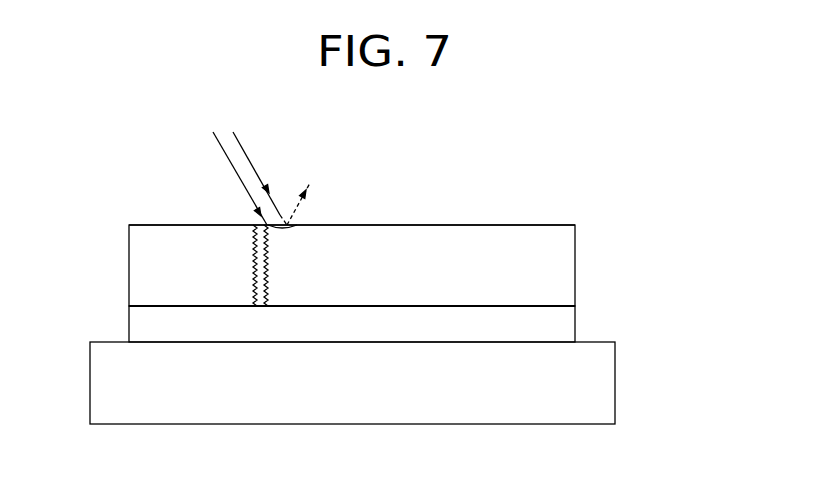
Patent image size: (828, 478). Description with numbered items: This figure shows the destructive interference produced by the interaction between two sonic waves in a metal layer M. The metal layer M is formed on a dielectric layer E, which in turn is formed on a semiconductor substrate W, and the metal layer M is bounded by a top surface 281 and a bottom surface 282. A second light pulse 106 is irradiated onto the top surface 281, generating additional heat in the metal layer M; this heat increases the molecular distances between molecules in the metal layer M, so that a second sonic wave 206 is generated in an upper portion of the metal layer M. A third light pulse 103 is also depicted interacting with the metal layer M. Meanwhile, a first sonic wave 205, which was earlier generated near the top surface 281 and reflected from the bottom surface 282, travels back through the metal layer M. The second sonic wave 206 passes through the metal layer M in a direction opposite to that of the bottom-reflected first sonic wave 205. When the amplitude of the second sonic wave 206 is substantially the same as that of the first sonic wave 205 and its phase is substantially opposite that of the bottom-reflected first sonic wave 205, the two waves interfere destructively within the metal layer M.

The second light pulse 106 is at (222, 145).
The third light pulse 103 is at (247, 150).
The second sonic wave 206 is at (297, 225).
The first sonic wave 205 is at (268, 258).
The top surface 281 is at (520, 224).
The bottom surface 282 is at (545, 306).
The metal layer M is at (575, 263).
The dielectric layer E is at (575, 328).
The semiconductor substrate W is at (615, 380).